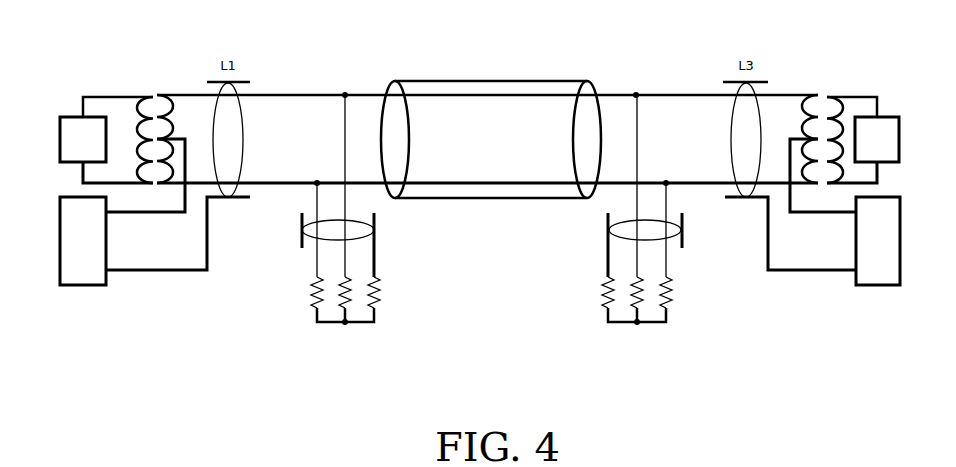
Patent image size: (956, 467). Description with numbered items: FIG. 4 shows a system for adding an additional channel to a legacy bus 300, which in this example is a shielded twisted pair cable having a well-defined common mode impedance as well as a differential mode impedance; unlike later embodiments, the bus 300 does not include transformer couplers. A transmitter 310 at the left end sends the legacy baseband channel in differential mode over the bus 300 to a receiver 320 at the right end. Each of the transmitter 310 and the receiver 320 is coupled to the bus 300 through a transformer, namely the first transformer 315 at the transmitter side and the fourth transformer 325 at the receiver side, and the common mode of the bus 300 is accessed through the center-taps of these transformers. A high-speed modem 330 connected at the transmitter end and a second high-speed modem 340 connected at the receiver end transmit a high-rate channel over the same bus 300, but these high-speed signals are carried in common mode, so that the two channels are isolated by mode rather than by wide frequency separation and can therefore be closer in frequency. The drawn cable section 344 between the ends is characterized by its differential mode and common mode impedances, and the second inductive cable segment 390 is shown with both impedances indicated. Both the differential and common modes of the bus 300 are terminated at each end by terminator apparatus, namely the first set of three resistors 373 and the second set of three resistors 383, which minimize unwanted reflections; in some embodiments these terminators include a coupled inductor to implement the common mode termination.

The legacy bus 300 is at (610, 93).
The transmitter 310 is at (60, 135).
The transformer T1 315 is at (152, 107).
The receiver 320 is at (899, 143).
The transformer T4 325 is at (823, 107).
The high-speed modem 330 is at (73, 287).
The high-speed modem 340 is at (875, 287).
The cable conductor 344 is at (468, 200).
The resistors R1a-R1c 373 is at (352, 243).
The resistors R2a-R2c 383 is at (629, 243).
The cable segment L2 390 is at (433, 82).